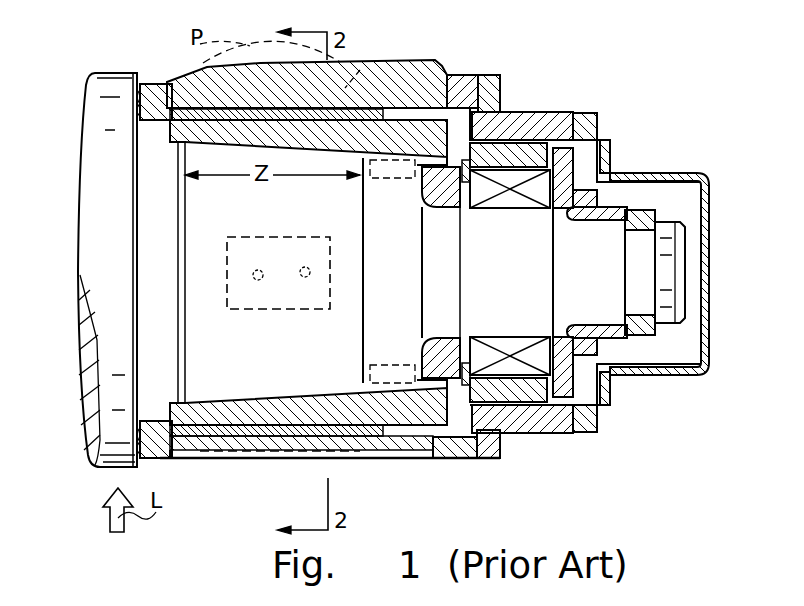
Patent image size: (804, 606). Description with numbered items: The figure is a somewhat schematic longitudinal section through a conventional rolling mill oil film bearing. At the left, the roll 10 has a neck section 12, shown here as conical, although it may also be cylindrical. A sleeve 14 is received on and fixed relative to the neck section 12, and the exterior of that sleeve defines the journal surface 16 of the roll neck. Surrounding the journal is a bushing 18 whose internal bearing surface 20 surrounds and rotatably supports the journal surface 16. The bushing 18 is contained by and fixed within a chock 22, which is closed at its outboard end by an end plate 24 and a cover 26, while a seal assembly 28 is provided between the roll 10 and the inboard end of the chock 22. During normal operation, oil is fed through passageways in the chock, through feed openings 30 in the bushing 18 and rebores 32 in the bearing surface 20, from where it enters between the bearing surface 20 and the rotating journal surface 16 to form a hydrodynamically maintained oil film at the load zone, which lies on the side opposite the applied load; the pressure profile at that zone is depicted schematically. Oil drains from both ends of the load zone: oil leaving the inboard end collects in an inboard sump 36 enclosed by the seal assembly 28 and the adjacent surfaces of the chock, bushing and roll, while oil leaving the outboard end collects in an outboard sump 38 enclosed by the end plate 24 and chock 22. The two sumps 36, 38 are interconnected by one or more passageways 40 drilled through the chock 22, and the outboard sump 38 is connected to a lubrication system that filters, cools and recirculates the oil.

The roll 10 is at (102, 468).
The neck section 12 is at (323, 343).
The sleeve 14 is at (209, 407).
The journal surface 16 is at (243, 433).
The bushing 18 is at (218, 426).
The bearing surface 20 is at (352, 422).
The chock 22 is at (390, 70).
The end plate 24 is at (530, 122).
The cover 26 is at (711, 184).
The seal assembly 28 is at (141, 70).
The feed openings 30 is at (300, 266).
The rebores 32 is at (288, 237).
The inboard sump 36 is at (177, 434).
The outboard sump 38 is at (417, 438).
The passageways 40 is at (290, 460).